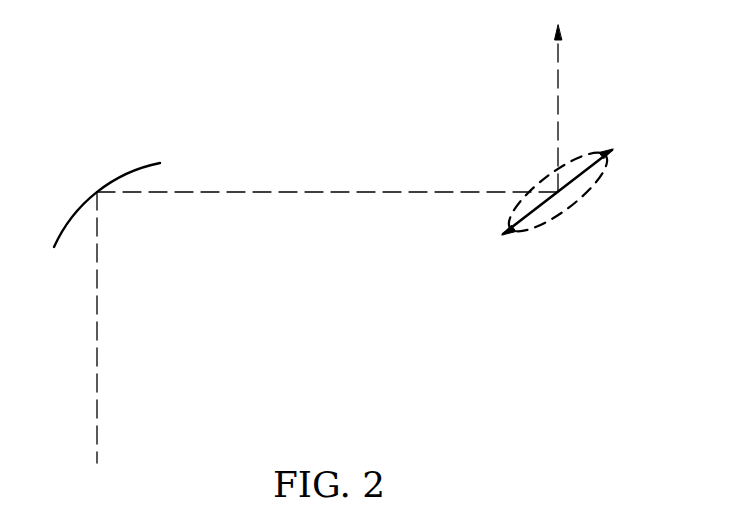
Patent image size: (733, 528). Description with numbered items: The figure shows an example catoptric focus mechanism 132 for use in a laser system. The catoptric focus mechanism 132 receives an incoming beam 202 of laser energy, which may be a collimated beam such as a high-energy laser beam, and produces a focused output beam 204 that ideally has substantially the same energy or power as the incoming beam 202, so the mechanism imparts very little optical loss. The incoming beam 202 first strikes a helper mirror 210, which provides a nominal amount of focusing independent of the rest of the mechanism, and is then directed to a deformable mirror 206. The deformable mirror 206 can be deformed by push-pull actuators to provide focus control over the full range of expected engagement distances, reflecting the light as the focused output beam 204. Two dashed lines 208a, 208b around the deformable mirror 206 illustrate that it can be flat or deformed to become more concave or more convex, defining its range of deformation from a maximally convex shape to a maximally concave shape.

The catoptric focus mechanism 132 is at (159, 66).
The incoming beam 202 is at (97, 330).
The focused output beam 204 is at (560, 78).
The deformable mirror 206 is at (537, 210).
The dashed line 208a is at (598, 179).
The dashed line 208b is at (577, 157).
The helper mirror 210 is at (118, 180).